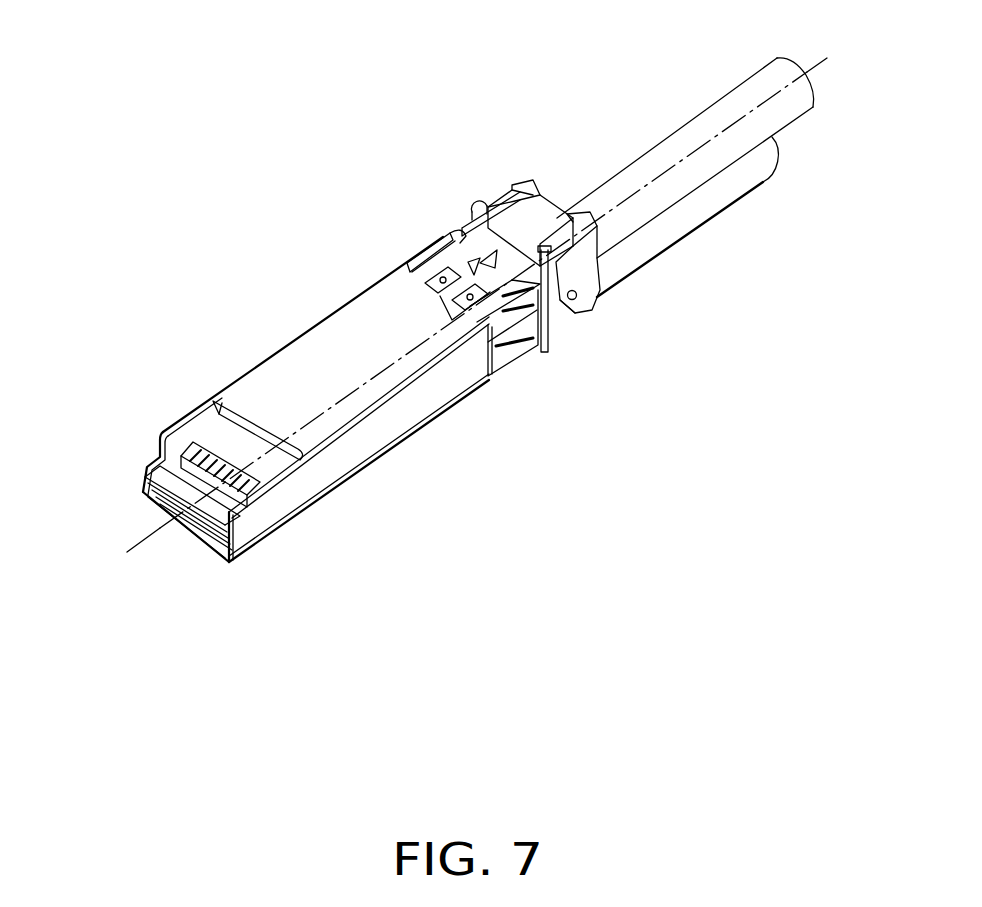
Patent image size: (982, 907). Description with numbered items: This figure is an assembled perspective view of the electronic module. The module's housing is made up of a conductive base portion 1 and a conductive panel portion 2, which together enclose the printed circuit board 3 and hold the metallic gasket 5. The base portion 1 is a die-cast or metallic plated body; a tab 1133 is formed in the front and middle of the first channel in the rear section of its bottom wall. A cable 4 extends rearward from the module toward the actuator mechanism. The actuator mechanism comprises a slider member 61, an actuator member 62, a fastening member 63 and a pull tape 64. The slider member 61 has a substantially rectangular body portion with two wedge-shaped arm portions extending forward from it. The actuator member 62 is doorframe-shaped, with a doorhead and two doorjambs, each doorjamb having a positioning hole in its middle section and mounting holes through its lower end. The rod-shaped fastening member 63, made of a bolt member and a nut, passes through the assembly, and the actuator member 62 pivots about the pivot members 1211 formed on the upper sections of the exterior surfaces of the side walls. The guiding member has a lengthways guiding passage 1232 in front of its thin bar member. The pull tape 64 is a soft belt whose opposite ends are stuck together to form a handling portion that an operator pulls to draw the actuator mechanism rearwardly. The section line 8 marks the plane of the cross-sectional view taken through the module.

The conductive base portion 1 is at (317, 360).
The conductive panel portion 2 is at (400, 447).
The printed circuit board 3 is at (223, 440).
The cable 4 is at (635, 175).
The metallic gasket 5 is at (513, 352).
The section line 8- 8 is at (827, 58).
The slider member 61 is at (522, 218).
The actuator member 62 is at (577, 297).
The fastening member 63 is at (552, 232).
The pull tape 64 is at (678, 218).
The tab 1133 is at (455, 232).
The pivot member 1211 is at (582, 310).
The lengthways guiding passage 1232 is at (497, 200).